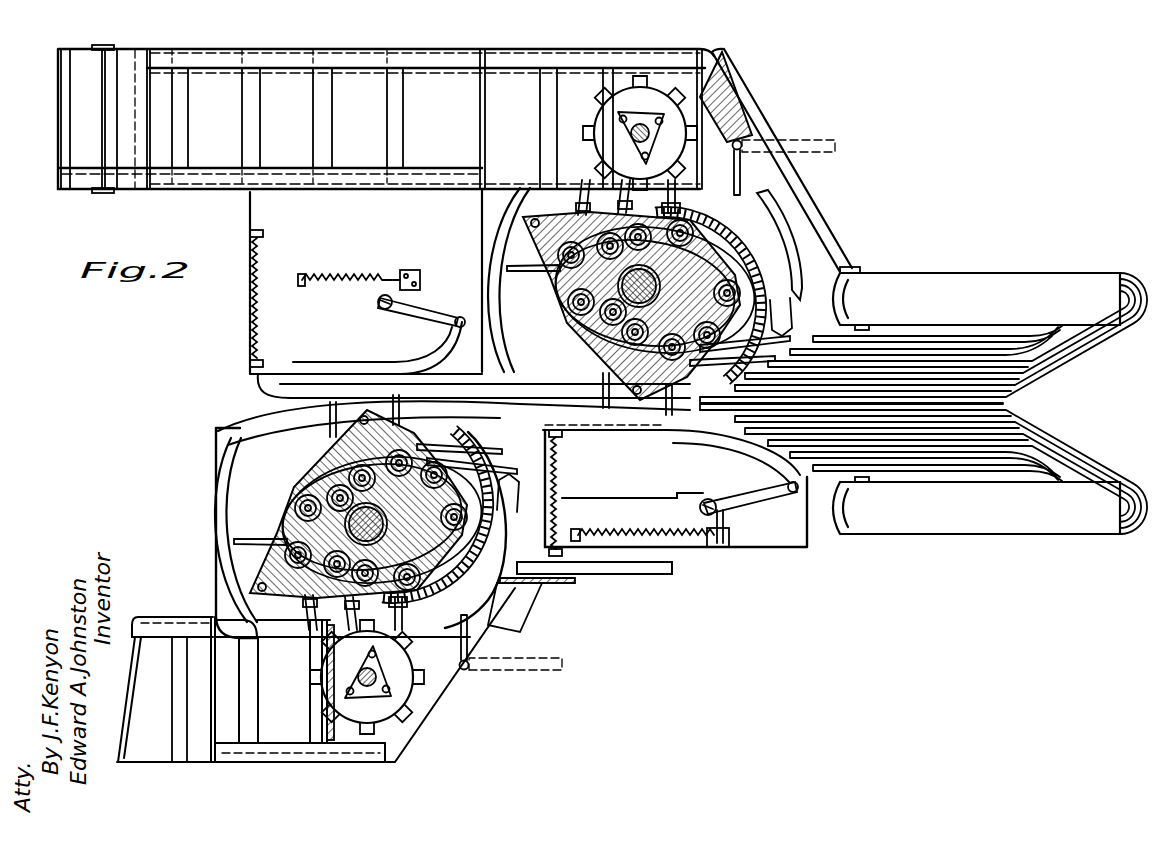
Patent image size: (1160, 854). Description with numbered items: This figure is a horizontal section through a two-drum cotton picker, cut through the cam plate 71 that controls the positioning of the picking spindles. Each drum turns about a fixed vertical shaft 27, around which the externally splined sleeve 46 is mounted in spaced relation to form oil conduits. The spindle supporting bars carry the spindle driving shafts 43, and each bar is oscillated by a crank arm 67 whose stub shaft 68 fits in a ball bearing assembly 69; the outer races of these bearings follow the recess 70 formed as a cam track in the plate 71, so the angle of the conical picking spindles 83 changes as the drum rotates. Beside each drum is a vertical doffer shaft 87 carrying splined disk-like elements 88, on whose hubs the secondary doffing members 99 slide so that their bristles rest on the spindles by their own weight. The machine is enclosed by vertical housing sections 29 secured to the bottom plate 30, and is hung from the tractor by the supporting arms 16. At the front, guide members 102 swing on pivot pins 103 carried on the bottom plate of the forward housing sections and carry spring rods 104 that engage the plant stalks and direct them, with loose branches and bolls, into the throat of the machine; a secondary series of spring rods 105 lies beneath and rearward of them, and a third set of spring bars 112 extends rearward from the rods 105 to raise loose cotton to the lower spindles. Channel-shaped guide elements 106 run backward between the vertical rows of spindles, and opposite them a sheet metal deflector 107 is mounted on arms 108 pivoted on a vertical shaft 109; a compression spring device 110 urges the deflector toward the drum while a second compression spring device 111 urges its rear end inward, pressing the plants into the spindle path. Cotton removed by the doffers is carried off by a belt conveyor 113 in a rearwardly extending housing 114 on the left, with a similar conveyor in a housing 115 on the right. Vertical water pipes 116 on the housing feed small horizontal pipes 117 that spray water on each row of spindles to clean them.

The supporting arms 16 is at (628, 574).
The shaft 27 is at (682, 228).
The housing sections 29 is at (620, 49).
The bottom plate 30 is at (800, 200).
The spindle driving shafts 43 is at (580, 290).
The externally splined sleeve 46 is at (572, 314).
The crank arms 67 is at (580, 298).
The stub shafts 68 is at (710, 226).
The ball bearing assemblies 69 is at (740, 328).
The recess 70 is at (722, 262).
The plate 71 is at (563, 215).
The conical picking spindle 83 is at (312, 450).
The doffer shaft 87 is at (650, 140).
The disk-like elements 88 is at (690, 92).
The secondary doffing members 99 is at (700, 110).
The guide members 102 is at (982, 278).
The pivot pins 103 is at (852, 268).
The spring rods 104 is at (1012, 426).
The secondary series of spring rods 105 is at (874, 342).
The channel-shaped guide elements 106 is at (778, 318).
The sheet metal deflector 107 is at (344, 372).
The arms 108 is at (418, 308).
The vertical shaft 109 is at (380, 309).
The compression spring device 110 is at (330, 278).
The compression spring device 111 is at (256, 302).
The spring bars 112 is at (262, 393).
The belt conveyor 113 is at (232, 168).
The housing 114 is at (290, 49).
The housing 115 is at (170, 764).
The vertical water pipes 116 is at (742, 144).
The horizontal pipe 117 is at (742, 165).